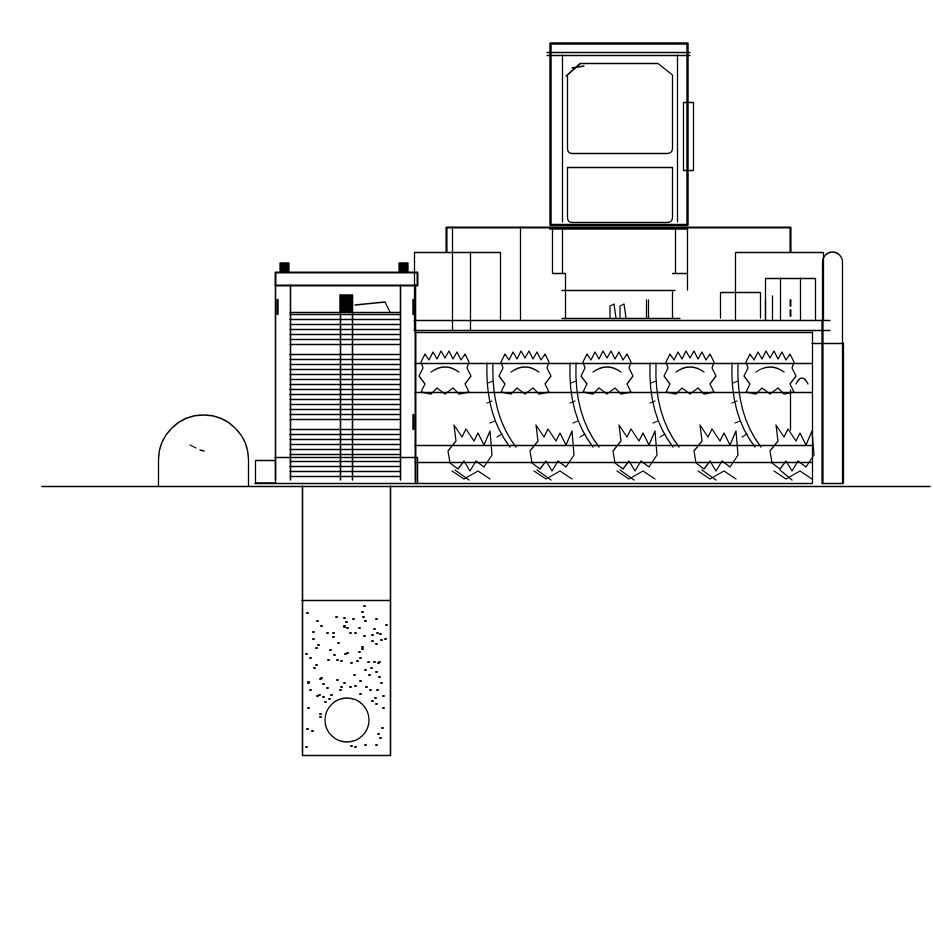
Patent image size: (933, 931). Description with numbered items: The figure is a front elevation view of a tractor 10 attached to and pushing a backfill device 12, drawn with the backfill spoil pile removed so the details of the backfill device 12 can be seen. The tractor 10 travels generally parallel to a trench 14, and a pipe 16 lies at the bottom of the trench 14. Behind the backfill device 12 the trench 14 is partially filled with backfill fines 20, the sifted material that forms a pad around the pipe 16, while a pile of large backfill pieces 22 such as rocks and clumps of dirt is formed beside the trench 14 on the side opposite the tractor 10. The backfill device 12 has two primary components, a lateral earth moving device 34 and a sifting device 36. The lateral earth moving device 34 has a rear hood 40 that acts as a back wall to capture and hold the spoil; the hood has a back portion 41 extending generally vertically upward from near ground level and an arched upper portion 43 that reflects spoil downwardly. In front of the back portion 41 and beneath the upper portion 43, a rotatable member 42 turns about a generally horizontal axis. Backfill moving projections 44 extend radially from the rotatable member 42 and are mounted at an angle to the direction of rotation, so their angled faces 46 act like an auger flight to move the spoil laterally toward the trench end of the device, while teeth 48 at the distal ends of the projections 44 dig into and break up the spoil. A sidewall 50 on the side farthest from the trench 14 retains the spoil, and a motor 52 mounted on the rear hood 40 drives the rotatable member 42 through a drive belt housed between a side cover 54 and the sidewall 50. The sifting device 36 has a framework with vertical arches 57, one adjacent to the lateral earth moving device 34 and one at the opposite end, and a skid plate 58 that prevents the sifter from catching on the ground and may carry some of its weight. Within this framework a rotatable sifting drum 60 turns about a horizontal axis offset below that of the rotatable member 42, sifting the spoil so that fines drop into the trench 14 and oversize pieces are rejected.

The tractor 10 is at (652, 205).
The backfill device 12 is at (861, 394).
The trench 14 is at (378, 570).
The pipe 16 is at (357, 725).
The backfill fines 20 is at (362, 662).
The pile of large backfill pieces 22 is at (168, 440).
The lateral earth moving device 34 is at (622, 266).
The sifting device 36 is at (312, 272).
The rear hood 40 is at (783, 325).
The back portion 41 is at (452, 360).
The rotatable member 42 is at (777, 400).
The upper portion 43 is at (481, 362).
The backfill moving projections 44 is at (480, 458).
The angled faces 46 is at (572, 452).
The teeth 48 is at (722, 466).
The sidewall 50 is at (822, 343).
The motor 52 is at (772, 298).
The side cover 54 is at (838, 428).
The arches 57 is at (400, 272).
The skid plate 58 is at (250, 483).
The sifting drum 60 is at (300, 480).